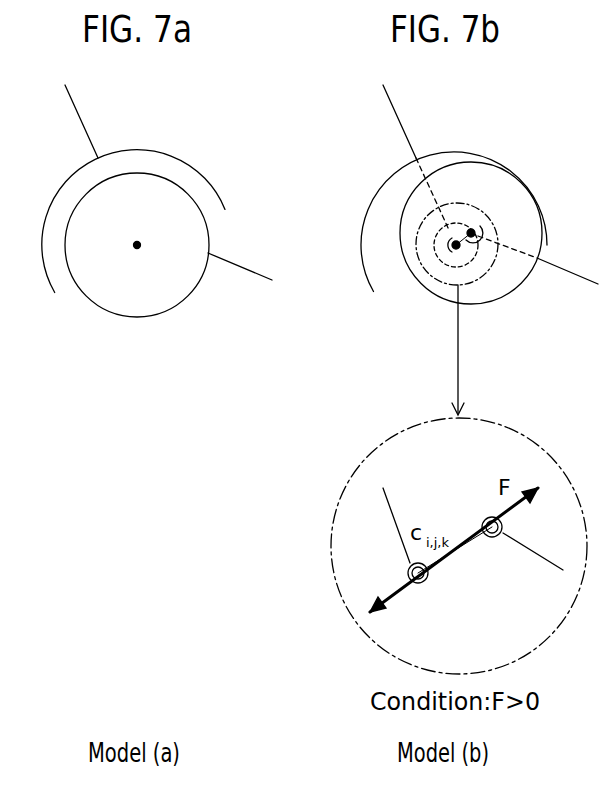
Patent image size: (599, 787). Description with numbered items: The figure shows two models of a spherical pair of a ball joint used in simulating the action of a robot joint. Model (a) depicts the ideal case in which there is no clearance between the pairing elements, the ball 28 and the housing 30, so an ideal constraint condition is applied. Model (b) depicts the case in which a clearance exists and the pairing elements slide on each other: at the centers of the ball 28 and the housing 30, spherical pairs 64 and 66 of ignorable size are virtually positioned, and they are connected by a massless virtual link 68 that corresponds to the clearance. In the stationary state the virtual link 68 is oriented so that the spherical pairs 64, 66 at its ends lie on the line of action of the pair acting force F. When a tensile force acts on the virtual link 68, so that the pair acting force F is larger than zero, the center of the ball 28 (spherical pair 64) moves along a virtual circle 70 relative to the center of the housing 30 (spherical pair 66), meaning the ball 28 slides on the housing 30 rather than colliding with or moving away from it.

In FIG. 7a, the ball 28 is at (177, 308).
In FIG. 7a, the housing 30 is at (55, 196).
In FIG. 7b, the housing 30 is at (372, 198).
In FIG. 7b, the spherical pair 64 is at (480, 228).
In FIG. 7b, the spherical pair 66 is at (456, 245).
In FIG. 7b, the virtual link 68 is at (467, 606).
In FIG. 7b, the virtual circle 70 is at (436, 283).